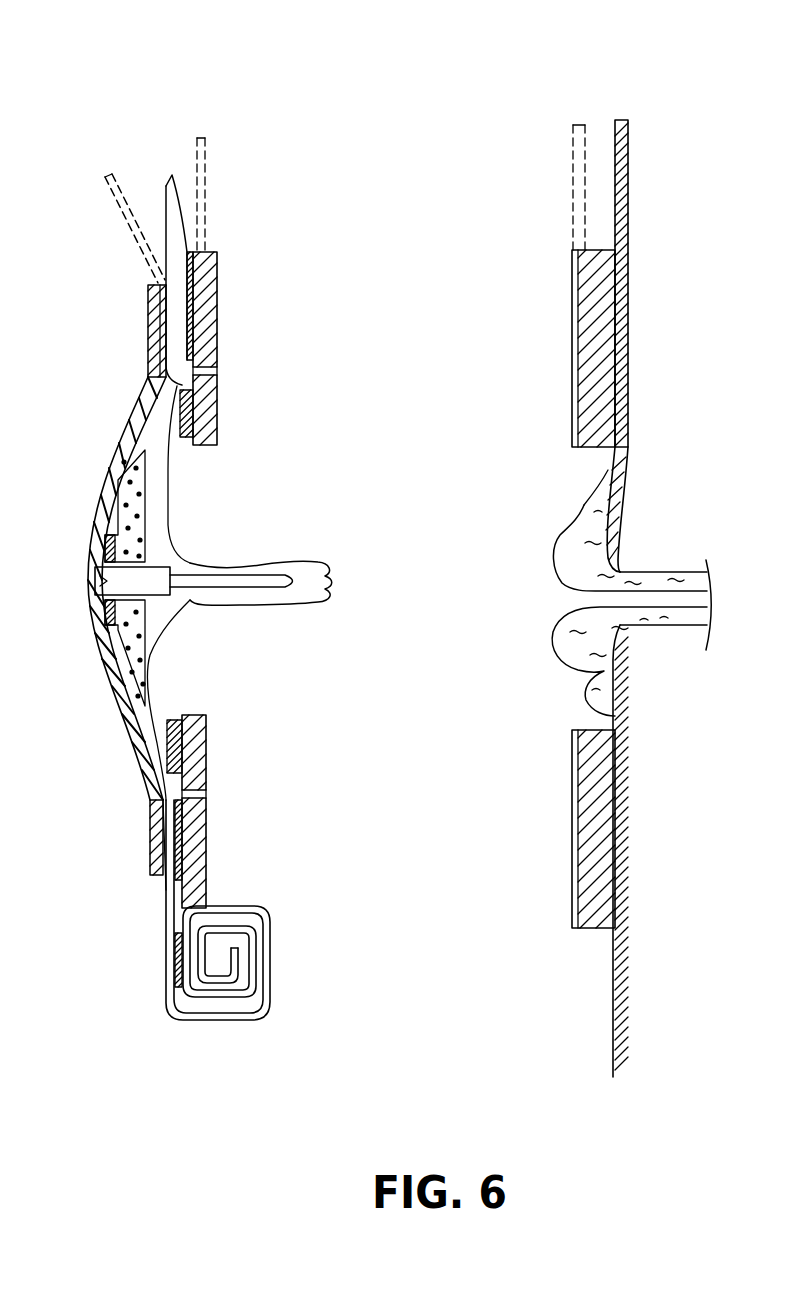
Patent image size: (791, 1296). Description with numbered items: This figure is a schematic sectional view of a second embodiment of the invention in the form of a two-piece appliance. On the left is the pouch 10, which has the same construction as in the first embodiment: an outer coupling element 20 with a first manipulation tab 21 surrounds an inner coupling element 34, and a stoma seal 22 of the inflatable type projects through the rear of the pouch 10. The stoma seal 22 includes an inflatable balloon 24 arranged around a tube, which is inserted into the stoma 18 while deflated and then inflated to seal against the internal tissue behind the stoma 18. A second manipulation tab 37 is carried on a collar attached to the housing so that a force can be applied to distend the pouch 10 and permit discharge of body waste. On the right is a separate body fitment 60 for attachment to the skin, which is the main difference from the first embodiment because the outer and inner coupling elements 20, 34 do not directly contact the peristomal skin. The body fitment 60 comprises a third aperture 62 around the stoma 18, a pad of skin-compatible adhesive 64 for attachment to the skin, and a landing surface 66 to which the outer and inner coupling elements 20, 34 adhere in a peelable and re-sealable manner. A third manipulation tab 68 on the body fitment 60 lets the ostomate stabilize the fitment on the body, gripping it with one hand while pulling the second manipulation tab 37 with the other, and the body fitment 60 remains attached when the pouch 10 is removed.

The pouch 10 is at (170, 116).
The first manipulation tab 21 is at (204, 156).
The second manipulation tab 37 is at (113, 212).
The outer coupling element 20 is at (211, 303).
The inner coupling element 34 is at (210, 407).
The stoma seal 22 is at (207, 510).
The inflatable balloon 24 is at (289, 577).
The body fitment 60 is at (511, 103).
The third manipulation tab 68 is at (573, 160).
The landing surface 66 is at (571, 352).
The adhesive 64 is at (627, 317).
The third aperture 62 is at (579, 463).
The stoma 18 is at (552, 555).